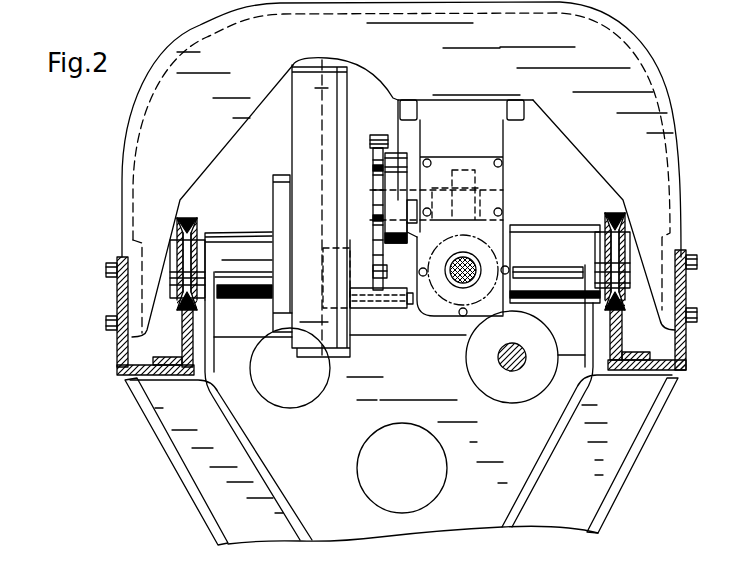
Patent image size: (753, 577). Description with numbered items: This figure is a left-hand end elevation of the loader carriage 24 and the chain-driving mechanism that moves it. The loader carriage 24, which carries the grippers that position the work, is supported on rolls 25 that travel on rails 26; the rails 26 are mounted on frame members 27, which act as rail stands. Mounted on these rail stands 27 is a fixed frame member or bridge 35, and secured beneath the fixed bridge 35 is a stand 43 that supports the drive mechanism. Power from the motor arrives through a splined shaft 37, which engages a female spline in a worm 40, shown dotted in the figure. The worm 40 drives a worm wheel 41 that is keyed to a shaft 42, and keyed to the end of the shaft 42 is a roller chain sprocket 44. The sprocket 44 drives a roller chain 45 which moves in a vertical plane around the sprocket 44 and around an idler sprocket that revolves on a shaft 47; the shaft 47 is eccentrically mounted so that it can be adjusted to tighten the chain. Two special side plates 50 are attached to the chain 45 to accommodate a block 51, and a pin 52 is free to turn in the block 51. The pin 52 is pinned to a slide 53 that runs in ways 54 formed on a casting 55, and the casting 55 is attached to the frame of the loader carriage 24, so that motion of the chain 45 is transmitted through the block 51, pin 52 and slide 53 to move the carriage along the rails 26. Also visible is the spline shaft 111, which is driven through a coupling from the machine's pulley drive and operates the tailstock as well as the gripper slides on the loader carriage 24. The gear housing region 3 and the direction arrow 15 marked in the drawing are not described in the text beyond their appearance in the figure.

The fixed bridge 35 is at (206, 96).
The gear housing 3 is at (270, 154).
The direction arrow 15 is at (323, 41).
The stand 43 is at (503, 137).
The worm wheel 41 is at (465, 170).
The shaft 42 is at (413, 224).
The splined shaft 37 is at (463, 275).
The worm 40 is at (500, 245).
The casting 55 is at (311, 211).
The ways 54 is at (321, 207).
The slide 53 is at (348, 266).
The roller chain 45 is at (379, 135).
The shaft 47 is at (373, 200).
The roller chain sprocket 44 is at (388, 155).
The side plates 50 is at (387, 271).
The block 51 is at (362, 308).
The pin 52 is at (411, 304).
The rolls 25 is at (183, 304).
The rails 26 is at (182, 338).
The frame members 27 is at (117, 360).
The spline shaft 111 is at (521, 353).
The loader carriage 24 is at (183, 477).